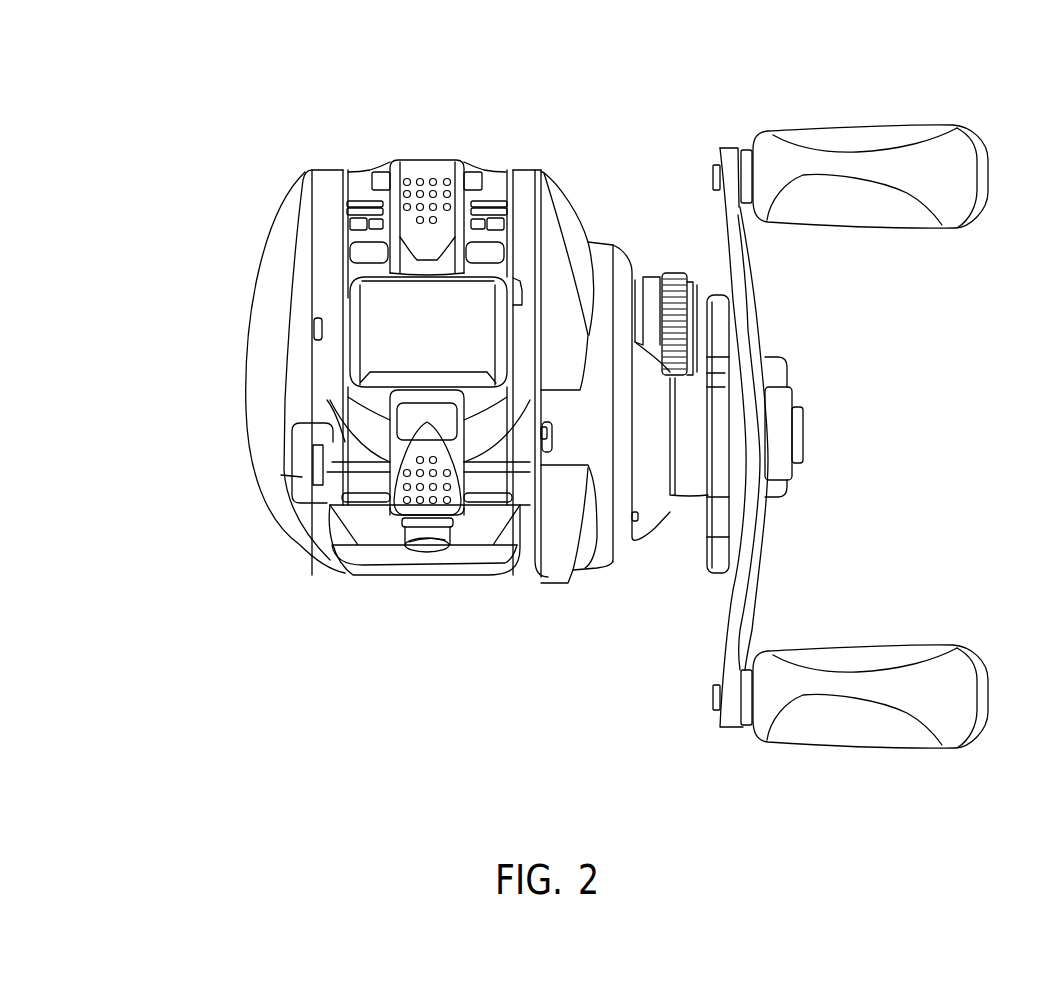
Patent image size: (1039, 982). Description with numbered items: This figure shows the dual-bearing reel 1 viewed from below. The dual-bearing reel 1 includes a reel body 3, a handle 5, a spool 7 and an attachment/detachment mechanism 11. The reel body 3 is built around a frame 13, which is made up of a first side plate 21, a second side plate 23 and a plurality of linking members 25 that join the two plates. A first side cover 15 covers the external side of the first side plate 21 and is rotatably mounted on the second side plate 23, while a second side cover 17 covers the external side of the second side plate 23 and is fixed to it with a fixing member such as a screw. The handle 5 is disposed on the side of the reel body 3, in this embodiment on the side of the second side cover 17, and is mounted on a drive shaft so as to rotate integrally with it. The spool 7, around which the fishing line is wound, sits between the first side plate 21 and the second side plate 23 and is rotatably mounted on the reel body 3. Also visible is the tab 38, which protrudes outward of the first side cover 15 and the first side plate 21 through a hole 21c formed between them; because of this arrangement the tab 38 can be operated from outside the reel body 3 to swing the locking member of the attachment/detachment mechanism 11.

The dual-bearing reel 1 is at (569, 117).
The reel body 3 is at (601, 202).
The handle 5 is at (773, 570).
The spool 7 is at (422, 320).
The attachment/detachment mechanism 11 is at (318, 562).
The frame 13 is at (357, 75).
The first side cover 15 is at (262, 343).
The second side cover 17 is at (558, 563).
The first side plate 21 is at (323, 188).
The second side plate 23 is at (523, 165).
The linking members 25 is at (375, 167).
The tab 38 is at (318, 387).
The hole 21c is at (284, 477).